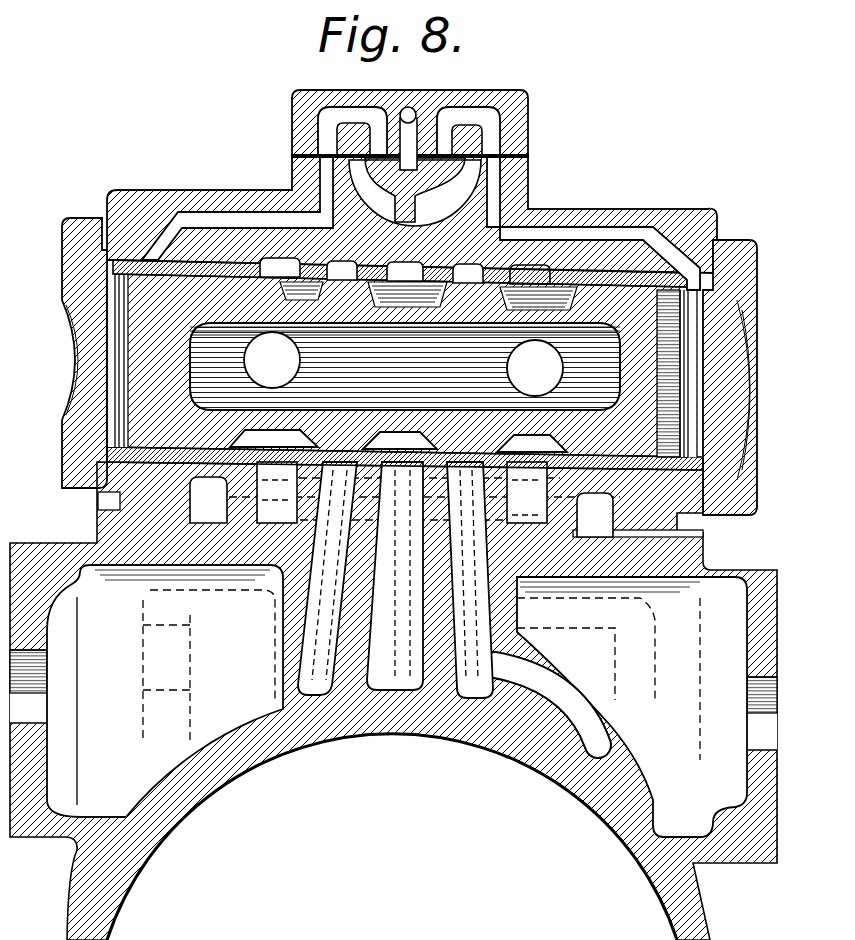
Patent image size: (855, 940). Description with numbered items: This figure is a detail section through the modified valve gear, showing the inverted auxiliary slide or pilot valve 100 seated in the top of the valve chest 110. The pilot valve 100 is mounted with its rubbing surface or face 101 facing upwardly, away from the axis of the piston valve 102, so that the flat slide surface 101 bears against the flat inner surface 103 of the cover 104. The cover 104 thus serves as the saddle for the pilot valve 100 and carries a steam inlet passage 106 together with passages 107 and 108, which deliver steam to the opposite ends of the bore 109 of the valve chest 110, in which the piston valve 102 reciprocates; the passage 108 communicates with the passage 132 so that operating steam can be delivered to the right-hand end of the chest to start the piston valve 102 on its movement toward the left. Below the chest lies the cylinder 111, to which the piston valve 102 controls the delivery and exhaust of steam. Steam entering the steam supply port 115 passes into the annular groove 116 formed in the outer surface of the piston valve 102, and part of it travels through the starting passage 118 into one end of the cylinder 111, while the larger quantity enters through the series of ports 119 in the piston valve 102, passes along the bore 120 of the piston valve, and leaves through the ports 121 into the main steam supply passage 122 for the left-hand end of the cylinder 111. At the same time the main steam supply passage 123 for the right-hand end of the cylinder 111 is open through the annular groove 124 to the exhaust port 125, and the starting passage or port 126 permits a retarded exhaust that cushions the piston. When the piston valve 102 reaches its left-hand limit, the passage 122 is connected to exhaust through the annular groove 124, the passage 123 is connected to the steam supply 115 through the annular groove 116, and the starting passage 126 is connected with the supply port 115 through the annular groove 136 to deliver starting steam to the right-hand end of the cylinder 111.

The auxiliary slide or pilot valve 100 is at (503, 135).
The rubbing surface or face 101 is at (383, 113).
The piston valve 102 is at (615, 305).
The flat inner surface 103 is at (467, 113).
The cover 104 is at (523, 110).
The steam inlet passage 106 is at (412, 107).
The passage 107 is at (340, 117).
The passage 108 is at (470, 157).
The bore 109 is at (133, 383).
The valve chest 110 is at (145, 205).
The cylinder 111 is at (163, 828).
The steam supply port 115 is at (35, 715).
The annular groove 116 is at (537, 450).
The starting passage 118 is at (530, 503).
The ports 119 is at (511, 378).
The bore of the piston valve 120 is at (398, 438).
The ports 121 is at (290, 378).
The main steam supply passage 122 is at (312, 720).
The main steam supply passage 123 is at (545, 728).
The annular groove 124 is at (422, 438).
The exhaust port 125 is at (377, 580).
The starting passage or port 126 is at (296, 500).
The passage 132 is at (575, 235).
The annular groove 136 is at (292, 445).